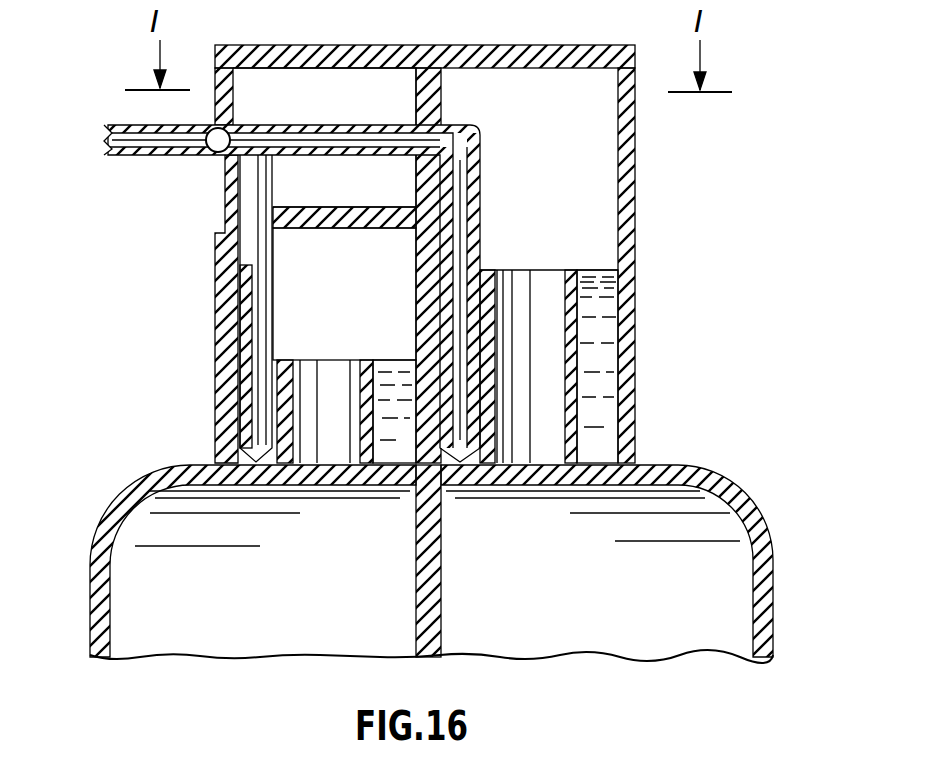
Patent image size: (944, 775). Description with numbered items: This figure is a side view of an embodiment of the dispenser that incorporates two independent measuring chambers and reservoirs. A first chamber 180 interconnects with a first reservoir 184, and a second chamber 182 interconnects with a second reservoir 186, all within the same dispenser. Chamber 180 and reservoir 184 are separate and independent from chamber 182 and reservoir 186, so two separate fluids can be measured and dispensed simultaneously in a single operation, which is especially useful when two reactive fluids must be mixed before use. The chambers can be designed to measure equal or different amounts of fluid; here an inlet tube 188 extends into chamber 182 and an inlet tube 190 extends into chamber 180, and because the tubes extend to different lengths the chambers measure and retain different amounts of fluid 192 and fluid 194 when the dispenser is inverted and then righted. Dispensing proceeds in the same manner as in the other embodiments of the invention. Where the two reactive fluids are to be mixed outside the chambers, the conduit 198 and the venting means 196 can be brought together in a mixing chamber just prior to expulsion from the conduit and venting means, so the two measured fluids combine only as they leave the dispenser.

The chamber 180 is at (592, 175).
The chamber 182 is at (303, 87).
The reservoir 184 is at (728, 582).
The reservoir 186 is at (152, 535).
The inlet tube 188 is at (360, 395).
The inlet tube 190 is at (558, 290).
The fluid 192 is at (398, 348).
The fluid 194 is at (592, 270).
The venting means 196 is at (383, 128).
The conduit 198 is at (252, 192).